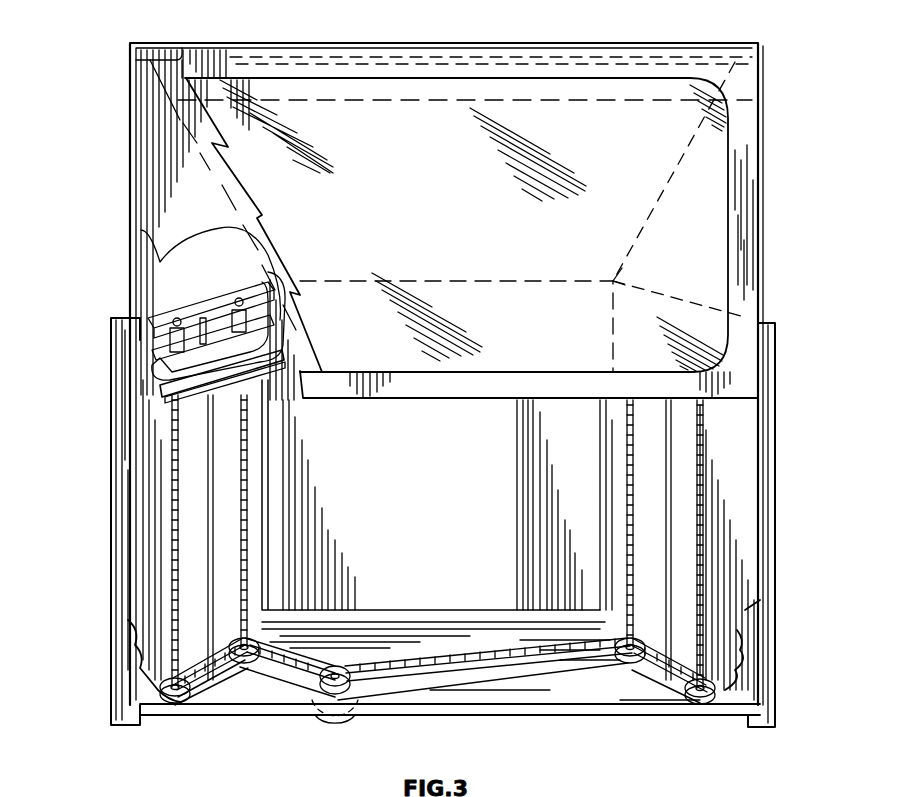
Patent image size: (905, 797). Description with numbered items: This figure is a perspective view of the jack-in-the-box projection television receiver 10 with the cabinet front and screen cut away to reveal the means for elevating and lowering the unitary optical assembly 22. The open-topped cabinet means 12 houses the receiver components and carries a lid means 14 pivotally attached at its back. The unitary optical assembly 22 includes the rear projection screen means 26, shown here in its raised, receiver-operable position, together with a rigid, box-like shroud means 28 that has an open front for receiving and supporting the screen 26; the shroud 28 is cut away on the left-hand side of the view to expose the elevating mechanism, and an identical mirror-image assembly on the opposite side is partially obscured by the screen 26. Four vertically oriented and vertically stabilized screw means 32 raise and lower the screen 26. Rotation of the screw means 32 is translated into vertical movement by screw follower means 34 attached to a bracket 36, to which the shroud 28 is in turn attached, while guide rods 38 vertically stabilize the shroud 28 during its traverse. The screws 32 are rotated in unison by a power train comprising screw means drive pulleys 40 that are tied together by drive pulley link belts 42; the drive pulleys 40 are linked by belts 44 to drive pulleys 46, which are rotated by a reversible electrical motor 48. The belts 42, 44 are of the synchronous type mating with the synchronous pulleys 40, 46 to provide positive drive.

The projection television receiver 10 is at (91, 31).
The cabinet means 12 is at (777, 534).
The lid means 14 is at (622, 62).
The unitary optical assembly means 22 is at (768, 138).
The rear projection screen means 26 is at (695, 234).
The shroud means 28 is at (130, 131).
The screw means 32 is at (243, 440).
The screw follower means 34 is at (205, 305).
The bracket 36 is at (165, 373).
The guide rods 38 is at (210, 527).
The screw means drive pulleys 40 is at (240, 650).
The drive pulley link belts 42 is at (210, 685).
The belts 44 is at (295, 683).
The drive pulleys 46 is at (355, 677).
The reversible electrical motor 48 is at (333, 718).